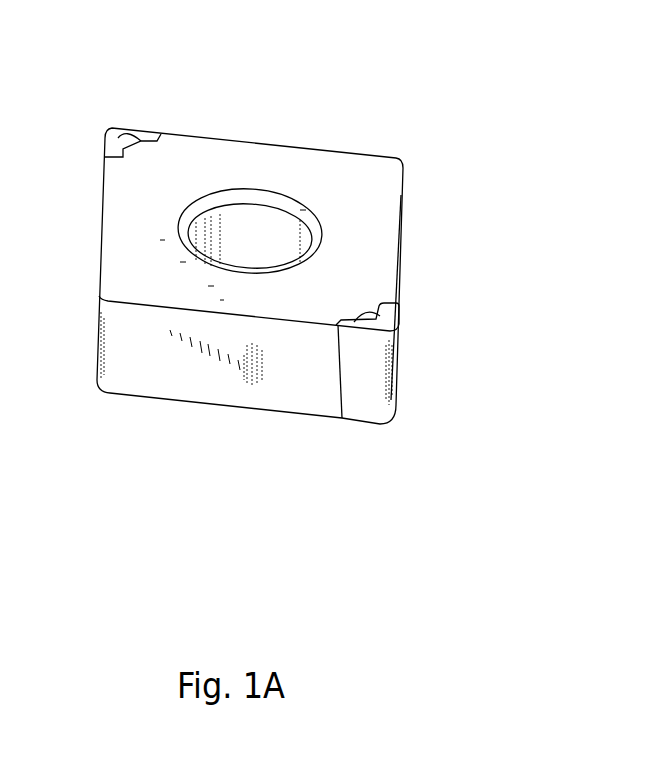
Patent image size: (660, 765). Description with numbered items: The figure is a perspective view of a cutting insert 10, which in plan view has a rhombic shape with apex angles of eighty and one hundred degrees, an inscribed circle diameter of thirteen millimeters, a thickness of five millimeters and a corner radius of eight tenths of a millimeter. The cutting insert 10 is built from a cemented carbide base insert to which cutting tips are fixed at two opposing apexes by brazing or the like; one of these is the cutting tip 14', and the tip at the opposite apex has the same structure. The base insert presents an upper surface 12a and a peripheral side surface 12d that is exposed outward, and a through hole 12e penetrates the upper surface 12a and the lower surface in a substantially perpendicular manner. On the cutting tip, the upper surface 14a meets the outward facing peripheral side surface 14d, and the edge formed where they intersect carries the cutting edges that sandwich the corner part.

The cutting insert 10 is at (290, 444).
The upper surface 12a is at (254, 167).
The peripheral side surface 12d is at (185, 380).
The through hole 12e is at (276, 232).
The cutting tip 14' is at (136, 95).
The upper surface 14a is at (388, 316).
The peripheral side surface 14d is at (392, 400).